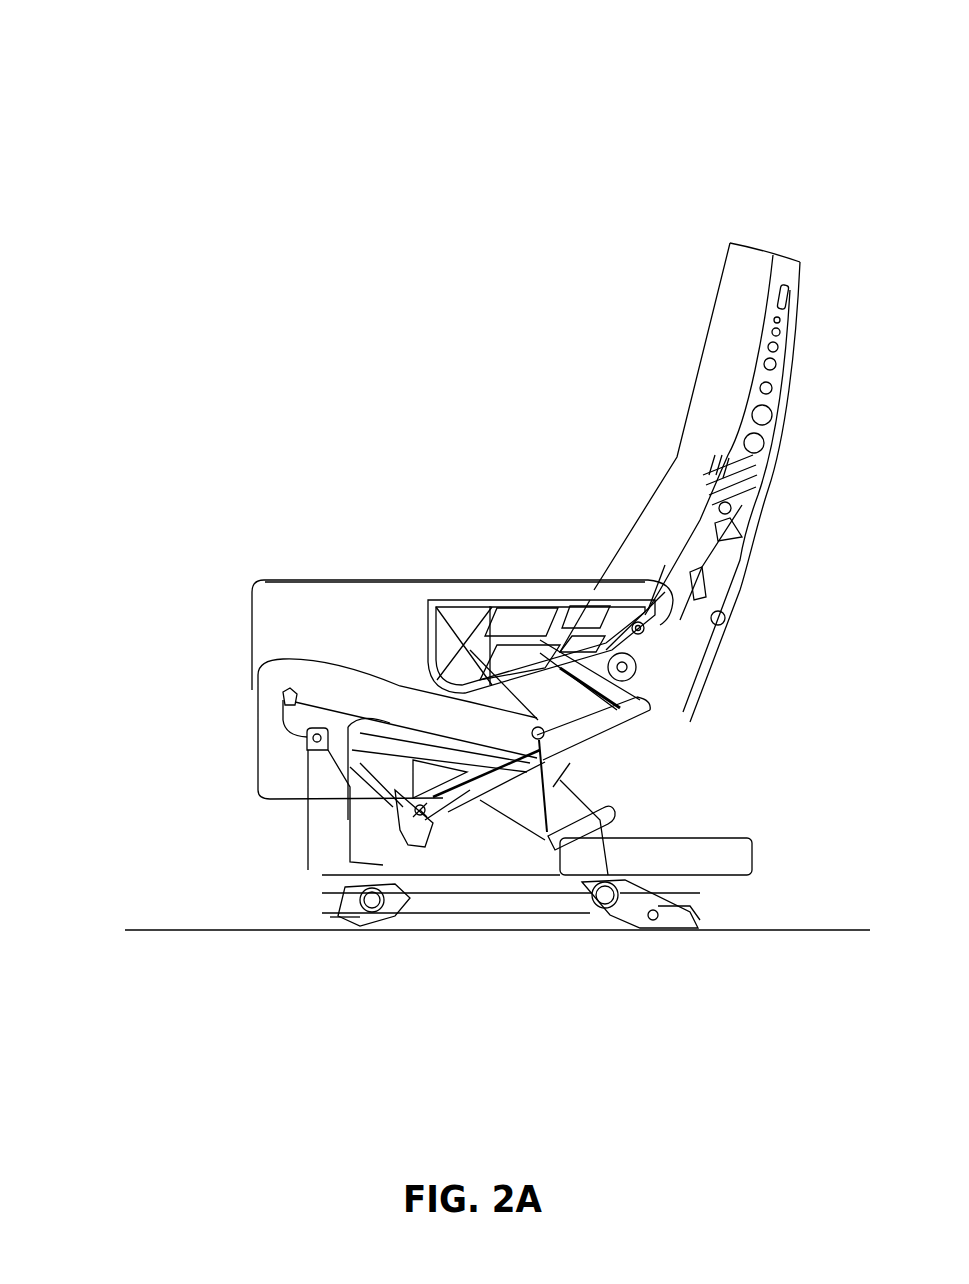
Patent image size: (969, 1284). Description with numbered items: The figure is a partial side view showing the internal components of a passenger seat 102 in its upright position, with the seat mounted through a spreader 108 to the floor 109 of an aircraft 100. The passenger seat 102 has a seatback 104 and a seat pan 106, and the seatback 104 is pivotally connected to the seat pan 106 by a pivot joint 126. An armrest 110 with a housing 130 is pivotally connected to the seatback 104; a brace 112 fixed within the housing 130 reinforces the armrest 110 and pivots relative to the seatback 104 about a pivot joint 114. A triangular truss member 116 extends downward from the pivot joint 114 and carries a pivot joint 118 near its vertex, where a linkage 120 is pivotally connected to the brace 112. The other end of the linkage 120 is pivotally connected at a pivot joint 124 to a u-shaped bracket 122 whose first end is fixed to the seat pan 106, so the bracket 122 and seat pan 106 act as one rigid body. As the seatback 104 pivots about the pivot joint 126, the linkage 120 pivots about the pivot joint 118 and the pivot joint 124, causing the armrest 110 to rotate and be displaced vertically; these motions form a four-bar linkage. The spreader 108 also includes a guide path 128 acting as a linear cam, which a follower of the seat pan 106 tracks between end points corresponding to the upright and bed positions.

The aircraft 100 is at (78, 44).
The passenger seat 102 is at (411, 302).
The seatback 104 is at (650, 485).
The seat pan 106 is at (270, 663).
The spreader 108 is at (355, 897).
The floor 109 is at (152, 932).
The armrest 110 is at (238, 562).
The brace 112 is at (478, 600).
The pivot joint 114 is at (633, 628).
The truss member 116 is at (653, 667).
The pivot joint 118 is at (652, 707).
The linkage 120 is at (630, 718).
The bracket 122 is at (416, 852).
The pivot joint 124 is at (415, 810).
The pivot joint 126 is at (548, 840).
The guide path 128 is at (540, 862).
The housing 130 is at (411, 578).